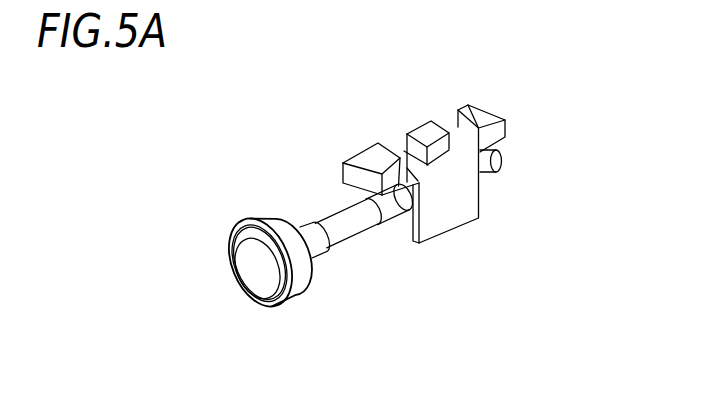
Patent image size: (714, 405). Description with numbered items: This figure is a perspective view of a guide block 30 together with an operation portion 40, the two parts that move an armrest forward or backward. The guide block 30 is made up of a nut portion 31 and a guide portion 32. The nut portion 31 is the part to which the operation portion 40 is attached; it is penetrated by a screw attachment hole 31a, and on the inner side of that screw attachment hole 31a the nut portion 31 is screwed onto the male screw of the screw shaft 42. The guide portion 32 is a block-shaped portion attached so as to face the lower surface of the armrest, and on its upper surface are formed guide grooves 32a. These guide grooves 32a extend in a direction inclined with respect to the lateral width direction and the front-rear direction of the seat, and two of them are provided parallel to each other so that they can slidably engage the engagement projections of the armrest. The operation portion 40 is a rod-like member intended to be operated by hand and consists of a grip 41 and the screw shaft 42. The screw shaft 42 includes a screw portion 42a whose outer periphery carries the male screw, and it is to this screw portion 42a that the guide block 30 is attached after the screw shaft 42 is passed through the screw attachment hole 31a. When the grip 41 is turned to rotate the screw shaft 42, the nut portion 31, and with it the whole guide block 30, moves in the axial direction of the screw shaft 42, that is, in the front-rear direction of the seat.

The guide block 30 is at (482, 196).
The nut portion 31 is at (457, 227).
The screw attachment hole 31a is at (397, 224).
The guide portion 32 is at (508, 130).
The guide grooves 32a is at (443, 125).
The operation portion 40 is at (319, 265).
The grip 41 is at (252, 282).
The screw shaft 42 is at (341, 213).
The screw portion 42a is at (397, 205).